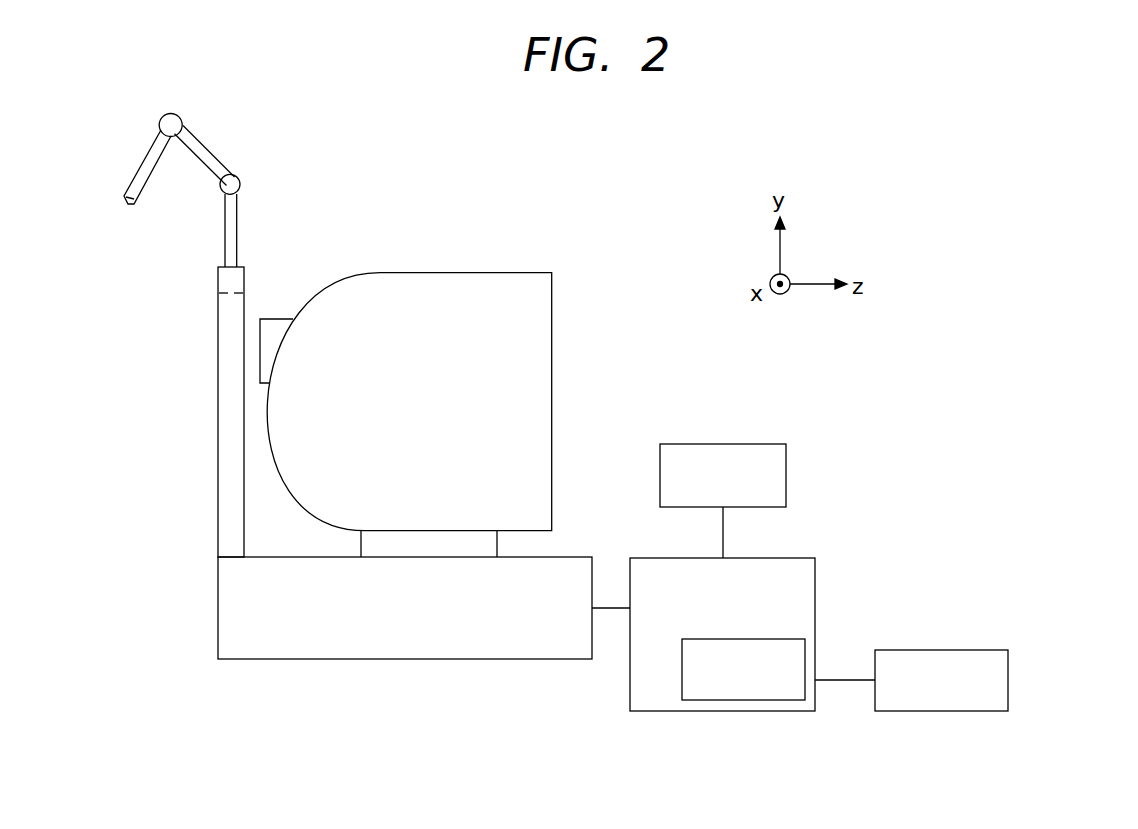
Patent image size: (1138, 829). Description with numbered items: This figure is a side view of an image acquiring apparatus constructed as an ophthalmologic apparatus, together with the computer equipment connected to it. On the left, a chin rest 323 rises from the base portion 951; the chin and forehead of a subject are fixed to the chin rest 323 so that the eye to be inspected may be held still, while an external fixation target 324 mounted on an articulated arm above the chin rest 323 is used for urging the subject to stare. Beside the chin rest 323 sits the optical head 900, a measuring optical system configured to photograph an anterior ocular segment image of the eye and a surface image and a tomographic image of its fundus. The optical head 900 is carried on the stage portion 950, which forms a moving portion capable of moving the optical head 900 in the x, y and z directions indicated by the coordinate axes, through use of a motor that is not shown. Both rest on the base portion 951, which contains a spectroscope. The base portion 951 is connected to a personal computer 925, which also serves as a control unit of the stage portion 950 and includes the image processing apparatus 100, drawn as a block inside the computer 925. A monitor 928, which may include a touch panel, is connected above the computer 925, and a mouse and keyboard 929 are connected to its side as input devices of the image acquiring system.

The image processing apparatus 100 is at (743, 677).
The chin rest 323 is at (229, 368).
The external fixation target 324 is at (207, 150).
The optical head 900 is at (536, 359).
The personal computer 925 is at (795, 597).
The monitor 928 is at (768, 474).
The mouse and keyboard 929 is at (993, 684).
The stage portion 950 is at (370, 542).
The base portion 951 is at (344, 645).